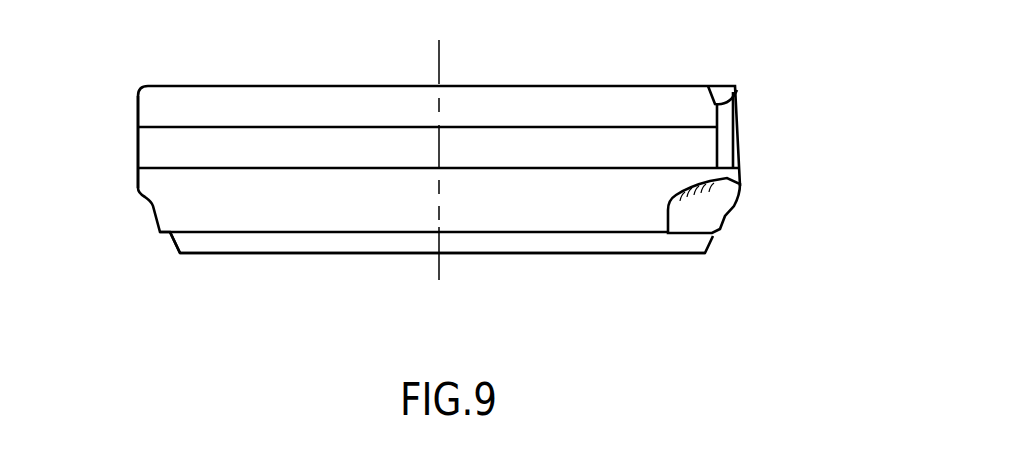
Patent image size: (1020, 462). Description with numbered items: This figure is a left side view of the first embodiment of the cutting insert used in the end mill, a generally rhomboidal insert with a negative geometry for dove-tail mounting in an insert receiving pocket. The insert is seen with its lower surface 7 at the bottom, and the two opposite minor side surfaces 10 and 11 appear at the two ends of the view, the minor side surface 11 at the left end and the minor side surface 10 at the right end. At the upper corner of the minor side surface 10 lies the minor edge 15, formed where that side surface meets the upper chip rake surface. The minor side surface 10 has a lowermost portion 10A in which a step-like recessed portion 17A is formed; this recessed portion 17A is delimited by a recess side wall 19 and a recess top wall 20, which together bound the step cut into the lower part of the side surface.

The lower surface 7 is at (348, 255).
The minor side surface 10 is at (808, 130).
The lowermost portion 10A is at (768, 200).
The minor side surface 11 is at (109, 162).
The minor edge 15 is at (738, 86).
The recessed portion 17A is at (692, 214).
The recess side wall 19 is at (675, 214).
The recess top wall 20 is at (731, 212).